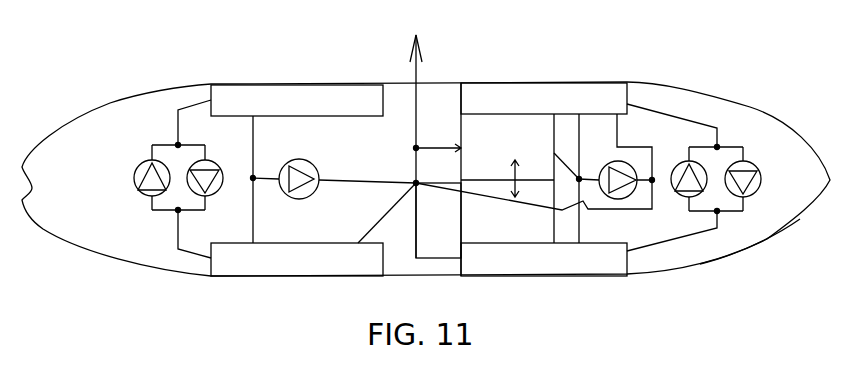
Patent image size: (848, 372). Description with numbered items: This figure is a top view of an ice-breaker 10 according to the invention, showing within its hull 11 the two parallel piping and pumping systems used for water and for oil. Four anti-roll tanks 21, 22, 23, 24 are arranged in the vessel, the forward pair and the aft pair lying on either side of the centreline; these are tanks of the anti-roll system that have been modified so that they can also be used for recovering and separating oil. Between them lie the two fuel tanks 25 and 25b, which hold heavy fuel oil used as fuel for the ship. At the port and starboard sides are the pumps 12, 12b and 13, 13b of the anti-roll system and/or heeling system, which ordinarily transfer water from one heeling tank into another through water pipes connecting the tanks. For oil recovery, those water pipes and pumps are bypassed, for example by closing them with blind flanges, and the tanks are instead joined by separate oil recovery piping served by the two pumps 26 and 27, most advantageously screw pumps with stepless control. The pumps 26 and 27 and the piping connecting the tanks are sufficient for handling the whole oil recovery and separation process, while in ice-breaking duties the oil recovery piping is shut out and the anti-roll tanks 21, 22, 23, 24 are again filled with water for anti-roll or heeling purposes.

The ice-breaker 10 is at (703, 83).
The hull 11 is at (723, 243).
The pump 12 is at (752, 158).
The pump 12b is at (680, 198).
The pump 13 is at (140, 190).
The pump 13b is at (220, 163).
The anti-roll tank 21 is at (265, 95).
The anti-roll tank 22 is at (573, 88).
The anti-roll tank 23 is at (590, 265).
The anti-roll tank 24 is at (258, 268).
The fuel tank 25 is at (467, 136).
The fuel tank 25b is at (468, 218).
The pump 26 is at (315, 163).
The pump 27 is at (610, 164).